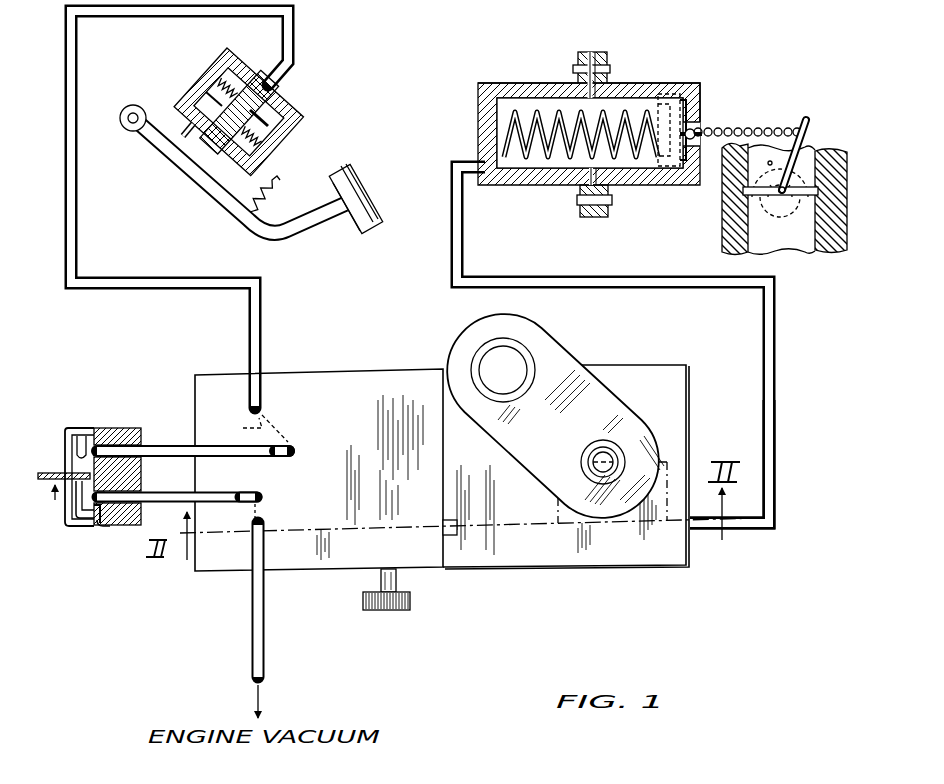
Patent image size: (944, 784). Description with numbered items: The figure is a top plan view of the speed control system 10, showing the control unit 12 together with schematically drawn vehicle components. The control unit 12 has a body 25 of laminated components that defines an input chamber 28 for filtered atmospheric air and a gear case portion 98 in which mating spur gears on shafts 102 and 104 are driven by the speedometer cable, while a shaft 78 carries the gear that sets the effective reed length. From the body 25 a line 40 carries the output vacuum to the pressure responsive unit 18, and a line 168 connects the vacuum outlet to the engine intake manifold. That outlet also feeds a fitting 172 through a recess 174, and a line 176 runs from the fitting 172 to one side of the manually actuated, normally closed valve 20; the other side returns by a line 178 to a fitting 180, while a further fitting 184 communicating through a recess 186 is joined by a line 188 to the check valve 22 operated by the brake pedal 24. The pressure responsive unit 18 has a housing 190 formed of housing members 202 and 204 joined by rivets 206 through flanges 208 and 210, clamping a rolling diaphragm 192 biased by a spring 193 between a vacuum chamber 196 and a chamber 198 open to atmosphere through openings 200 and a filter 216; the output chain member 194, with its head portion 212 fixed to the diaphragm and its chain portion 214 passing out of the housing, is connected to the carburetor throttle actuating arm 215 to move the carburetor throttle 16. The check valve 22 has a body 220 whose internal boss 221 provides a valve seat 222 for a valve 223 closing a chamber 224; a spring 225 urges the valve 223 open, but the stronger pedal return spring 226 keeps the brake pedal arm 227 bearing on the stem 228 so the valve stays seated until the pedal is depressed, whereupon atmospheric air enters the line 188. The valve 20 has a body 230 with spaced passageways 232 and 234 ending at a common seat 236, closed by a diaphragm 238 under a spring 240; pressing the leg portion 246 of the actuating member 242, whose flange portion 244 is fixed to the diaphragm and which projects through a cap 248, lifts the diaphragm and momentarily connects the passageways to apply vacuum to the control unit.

The speed control system 10 is at (432, 130).
The control unit 12 is at (453, 465).
The carburetor throttle 16 is at (826, 175).
The pressure responsive unit 18 is at (627, 128).
The manually actuated normally closed valve 20 is at (107, 491).
The check valve 22 is at (254, 138).
The brake pedal 24 is at (362, 182).
The body 25 is at (680, 388).
The input chamber 28 is at (463, 160).
The line 40 is at (776, 412).
The shaft 78 is at (378, 583).
The gear case portion 98 is at (660, 447).
The shaft 102 is at (612, 447).
The shaft 104 is at (510, 358).
The line 168 is at (256, 629).
The fitting 172 is at (264, 495).
The recess 174 is at (263, 508).
The line 176 is at (220, 491).
The line 178 is at (163, 445).
The fitting 180 is at (296, 444).
The fitting 184 is at (265, 411).
The recess 186 is at (243, 428).
The line 188 is at (262, 343).
The housing 190 is at (535, 88).
The rolling diaphragm 192 is at (650, 168).
The spring 193 is at (527, 117).
The output chain member 194 is at (752, 128).
The chamber 196 is at (556, 98).
The chamber 198 is at (662, 168).
The openings 200 is at (700, 100).
The housing member 202 is at (520, 83).
The housing member 204 is at (685, 80).
The rivets 206 is at (608, 64).
The flange 208 is at (583, 216).
The flange 210 is at (605, 216).
The head portion 212 is at (702, 138).
The chain portion 214 is at (775, 128).
The carburetor throttle actuating arm 215 is at (808, 136).
The filter 216 is at (703, 110).
The body 220 is at (293, 110).
The valve land 221 is at (297, 128).
The valve seat 222 is at (275, 158).
The valve 223 is at (262, 103).
The chamber 224 is at (240, 98).
The spring 225 is at (225, 90).
The pedal return spring 226 is at (248, 222).
The brake pedal arm 227 is at (207, 193).
The stem 228 is at (176, 124).
The body 230 is at (128, 435).
The fluid passageway 232 is at (140, 460).
The fluid passageway 234 is at (136, 508).
The valve seat 236 is at (102, 522).
The diaphragm 238 is at (73, 428).
The spring 240 is at (66, 448).
The actuating member 242 is at (40, 483).
The flange portion 244 is at (88, 530).
The leg portion 246 is at (85, 528).
The cap 248 is at (99, 535).